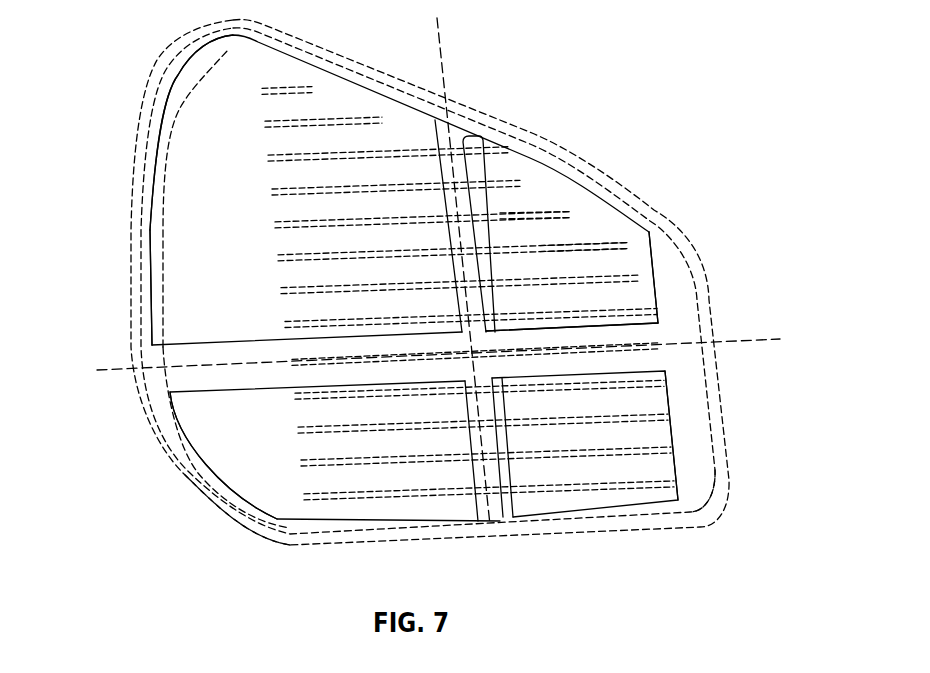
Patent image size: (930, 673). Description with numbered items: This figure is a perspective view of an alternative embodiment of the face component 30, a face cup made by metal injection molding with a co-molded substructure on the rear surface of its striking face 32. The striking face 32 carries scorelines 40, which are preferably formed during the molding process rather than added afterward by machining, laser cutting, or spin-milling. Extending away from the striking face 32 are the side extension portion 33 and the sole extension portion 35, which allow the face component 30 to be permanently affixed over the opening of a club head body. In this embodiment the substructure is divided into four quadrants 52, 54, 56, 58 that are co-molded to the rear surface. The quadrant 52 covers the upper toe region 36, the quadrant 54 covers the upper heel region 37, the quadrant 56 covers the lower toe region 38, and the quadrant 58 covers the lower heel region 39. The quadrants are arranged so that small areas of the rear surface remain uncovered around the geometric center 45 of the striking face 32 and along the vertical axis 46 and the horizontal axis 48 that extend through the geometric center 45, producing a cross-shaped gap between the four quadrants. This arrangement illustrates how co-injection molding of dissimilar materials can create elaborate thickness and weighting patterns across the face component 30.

The face component 30 is at (567, 135).
The striking face 32 is at (666, 370).
The side extension portion 33 is at (157, 270).
The sole extension portion 35 is at (278, 537).
The upper toe region 36 is at (190, 103).
The upper heel region 37 is at (627, 262).
The lower toe region 38 is at (207, 420).
The lower heel region 39 is at (672, 442).
The scorelines 40 is at (577, 243).
The geometric center 45 is at (470, 388).
The vertical axis 46 is at (451, 44).
The horizontal axis 48 is at (755, 342).
The quadrant 52 is at (322, 97).
The quadrant 54 is at (543, 197).
The quadrant 56 is at (240, 482).
The quadrant 58 is at (620, 500).